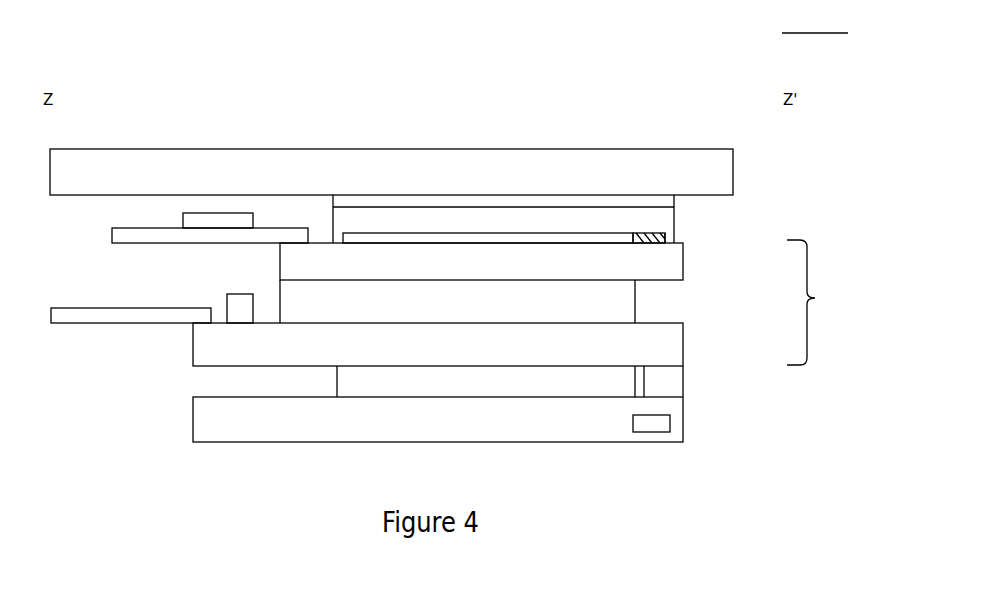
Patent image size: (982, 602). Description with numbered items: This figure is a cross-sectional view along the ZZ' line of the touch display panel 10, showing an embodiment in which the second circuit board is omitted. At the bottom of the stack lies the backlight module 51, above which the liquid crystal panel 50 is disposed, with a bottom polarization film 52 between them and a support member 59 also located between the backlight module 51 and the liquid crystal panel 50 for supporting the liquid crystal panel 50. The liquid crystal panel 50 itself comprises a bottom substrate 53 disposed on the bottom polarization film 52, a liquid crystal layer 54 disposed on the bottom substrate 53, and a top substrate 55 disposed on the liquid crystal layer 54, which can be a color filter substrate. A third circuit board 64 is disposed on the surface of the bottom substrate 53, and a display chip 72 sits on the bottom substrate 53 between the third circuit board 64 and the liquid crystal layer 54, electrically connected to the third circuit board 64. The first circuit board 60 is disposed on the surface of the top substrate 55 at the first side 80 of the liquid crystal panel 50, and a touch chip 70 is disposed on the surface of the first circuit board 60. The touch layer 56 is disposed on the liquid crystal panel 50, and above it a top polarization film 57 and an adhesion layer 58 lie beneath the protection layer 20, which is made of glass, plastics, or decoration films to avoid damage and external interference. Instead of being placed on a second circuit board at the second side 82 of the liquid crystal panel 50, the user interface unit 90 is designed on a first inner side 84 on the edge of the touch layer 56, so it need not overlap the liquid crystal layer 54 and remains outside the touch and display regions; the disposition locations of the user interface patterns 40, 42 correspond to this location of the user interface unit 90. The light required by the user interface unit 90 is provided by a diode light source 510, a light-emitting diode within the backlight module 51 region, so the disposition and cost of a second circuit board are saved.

The touch display panel 10 is at (815, 21).
The protection layer 20 is at (391, 155).
The user interface pattern 40 is at (391, 155).
The user interface pattern 42 is at (163, 130).
The liquid crystal panel 50 is at (516, 355).
The backlight module 51 is at (505, 425).
The bottom polarization film 52 is at (345, 384).
The bottom substrate 53 is at (672, 339).
The liquid crystal layer 54 is at (623, 300).
The top substrate 55 is at (672, 265).
The touch layer 56 is at (357, 237).
The top polarization film 57 is at (661, 218).
The adhesion layer 58 is at (442, 202).
The support member 59 is at (678, 378).
The diode light source 510 is at (660, 423).
The first circuit board 60 is at (145, 233).
The third circuit board 64 is at (151, 318).
The touch chip 70 is at (218, 223).
The display chip 72 is at (241, 309).
The first side 80 is at (110, 270).
The second side 82 is at (763, 210).
The first inner side 84 is at (627, 217).
The user interface unit 90 is at (667, 239).